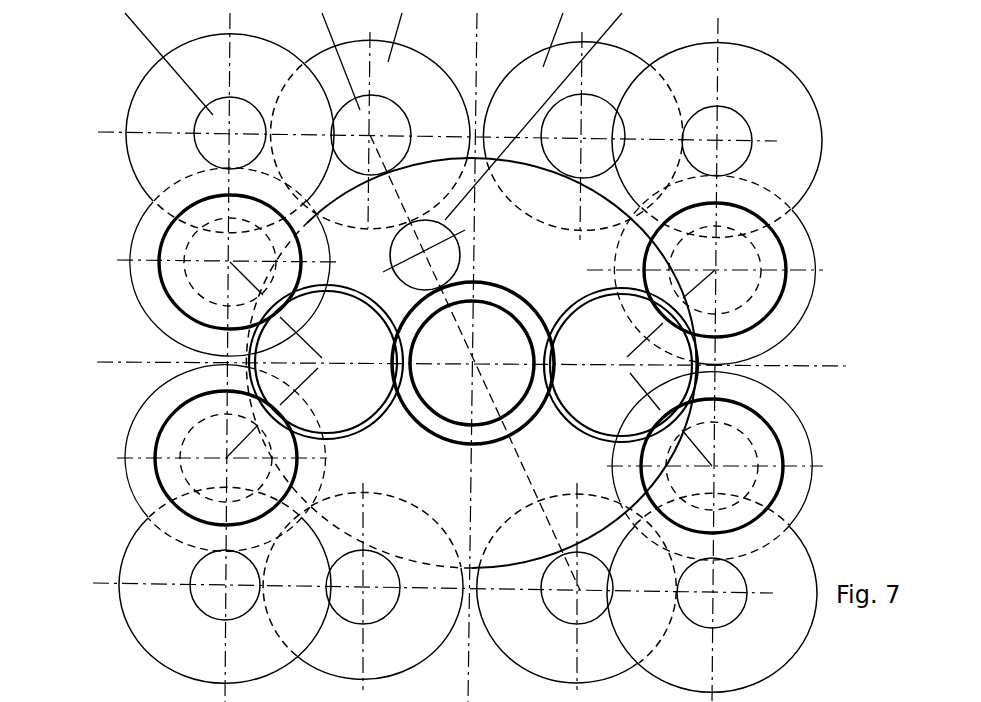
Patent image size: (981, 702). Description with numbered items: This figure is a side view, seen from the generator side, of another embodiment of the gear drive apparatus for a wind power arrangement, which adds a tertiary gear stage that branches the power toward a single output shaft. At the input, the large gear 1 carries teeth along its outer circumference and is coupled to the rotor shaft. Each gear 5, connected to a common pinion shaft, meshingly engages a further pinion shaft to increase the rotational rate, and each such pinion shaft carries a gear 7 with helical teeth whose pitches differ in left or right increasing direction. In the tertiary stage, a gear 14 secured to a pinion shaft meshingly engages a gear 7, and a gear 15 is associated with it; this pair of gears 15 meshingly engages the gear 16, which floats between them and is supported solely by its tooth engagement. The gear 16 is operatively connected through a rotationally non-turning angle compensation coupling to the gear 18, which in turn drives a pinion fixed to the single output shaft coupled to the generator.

The large gear 1 is at (520, 258).
The gear 5 is at (150, 100).
The gear 7 is at (170, 250).
The gear 14 is at (233, 362).
The gear 15 is at (250, 347).
The gear 16 is at (443, 387).
The gear 18 is at (520, 305).